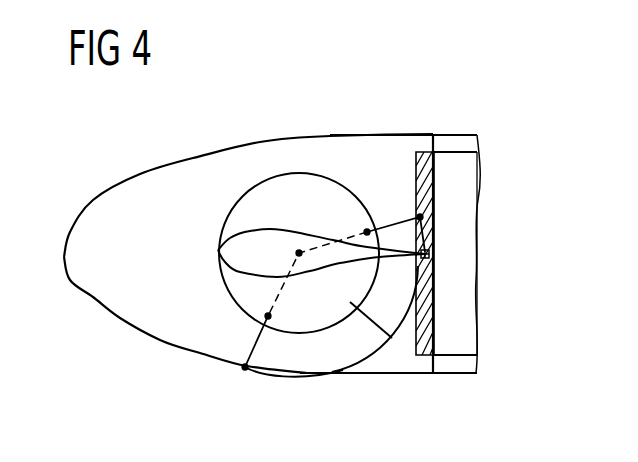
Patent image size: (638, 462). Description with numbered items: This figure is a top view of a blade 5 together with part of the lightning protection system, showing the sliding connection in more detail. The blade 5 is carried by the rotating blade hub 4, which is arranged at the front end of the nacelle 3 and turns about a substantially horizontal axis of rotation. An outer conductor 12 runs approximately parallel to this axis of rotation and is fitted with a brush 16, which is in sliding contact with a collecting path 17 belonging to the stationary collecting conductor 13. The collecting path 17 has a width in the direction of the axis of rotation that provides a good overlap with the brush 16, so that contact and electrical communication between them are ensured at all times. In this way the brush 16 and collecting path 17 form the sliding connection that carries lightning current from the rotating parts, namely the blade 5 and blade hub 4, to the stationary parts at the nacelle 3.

The nacelle 3 is at (455, 142).
The blade hub 4 is at (193, 158).
The blade 5 is at (238, 248).
The outer conductor 12 is at (297, 383).
The collecting conductor 13 is at (465, 185).
The brush 16 is at (433, 247).
The collecting path 17 is at (455, 327).